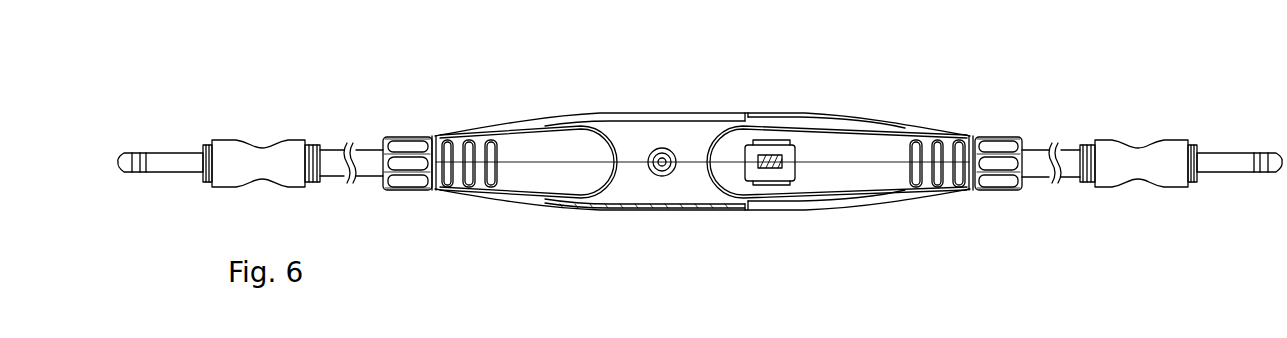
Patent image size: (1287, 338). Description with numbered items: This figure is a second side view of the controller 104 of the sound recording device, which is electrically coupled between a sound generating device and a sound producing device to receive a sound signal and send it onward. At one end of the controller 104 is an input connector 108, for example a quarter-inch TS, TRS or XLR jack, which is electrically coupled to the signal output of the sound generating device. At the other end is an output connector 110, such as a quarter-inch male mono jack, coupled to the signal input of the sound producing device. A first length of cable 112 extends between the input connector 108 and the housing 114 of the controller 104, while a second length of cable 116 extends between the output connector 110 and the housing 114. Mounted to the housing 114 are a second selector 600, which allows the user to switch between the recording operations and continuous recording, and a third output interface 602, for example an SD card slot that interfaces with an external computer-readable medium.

The controller 104 is at (435, 89).
The input connector 108 is at (1273, 160).
The output connector 110 is at (123, 152).
The first length of cable 112 is at (1037, 150).
The housing 114 is at (847, 208).
The second length of cable 116 is at (337, 150).
The second selector 600 is at (663, 148).
The third output interface 602 is at (768, 185).